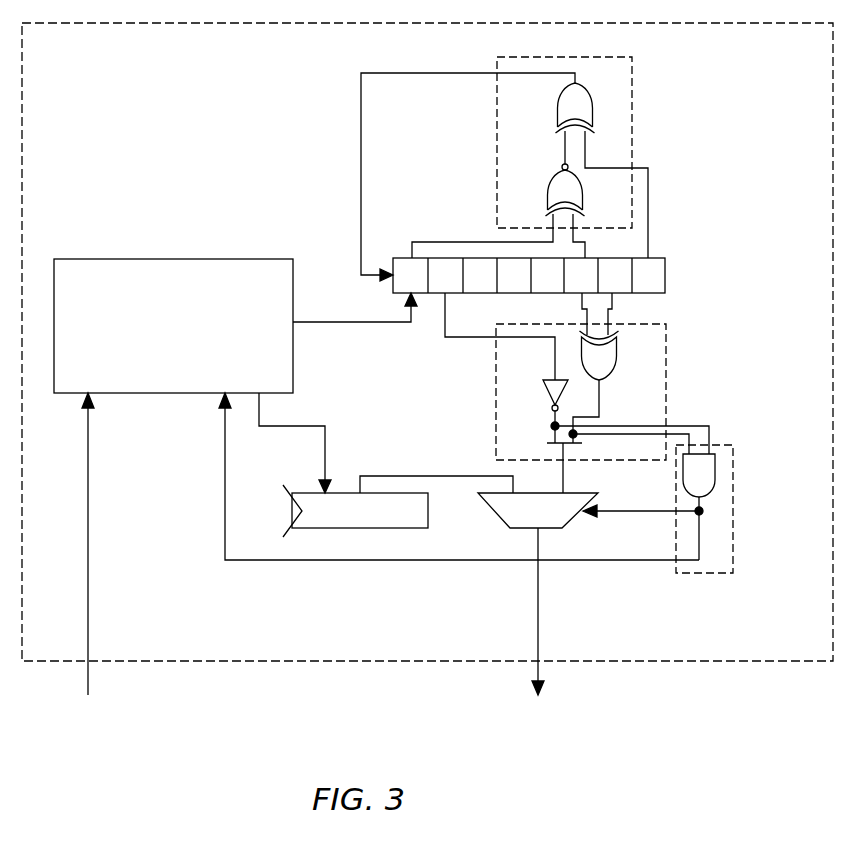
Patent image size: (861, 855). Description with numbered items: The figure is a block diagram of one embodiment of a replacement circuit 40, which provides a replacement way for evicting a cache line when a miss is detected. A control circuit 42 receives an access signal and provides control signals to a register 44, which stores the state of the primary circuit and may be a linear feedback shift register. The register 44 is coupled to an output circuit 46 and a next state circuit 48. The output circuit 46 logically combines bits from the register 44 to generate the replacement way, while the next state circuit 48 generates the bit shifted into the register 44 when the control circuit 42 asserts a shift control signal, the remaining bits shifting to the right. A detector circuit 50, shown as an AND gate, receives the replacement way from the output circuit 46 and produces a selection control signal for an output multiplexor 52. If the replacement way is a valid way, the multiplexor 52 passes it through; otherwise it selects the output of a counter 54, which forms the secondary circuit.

The replacement circuit 40 is at (172, 116).
The control circuit 42 is at (285, 382).
The register 44 is at (665, 275).
The output circuit 46 is at (666, 390).
The next state circuit 48 is at (632, 143).
The detector circuit 50 is at (733, 483).
The output multiplexor 52 is at (597, 492).
The counter 54 is at (428, 522).